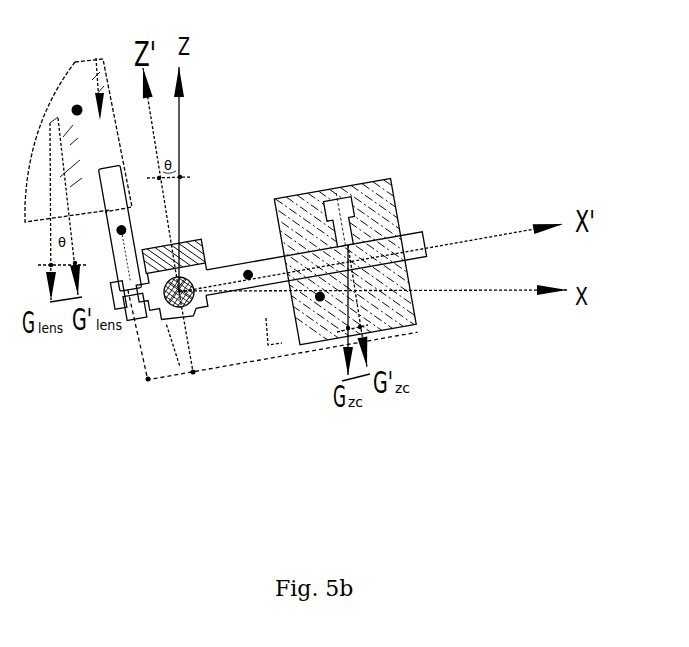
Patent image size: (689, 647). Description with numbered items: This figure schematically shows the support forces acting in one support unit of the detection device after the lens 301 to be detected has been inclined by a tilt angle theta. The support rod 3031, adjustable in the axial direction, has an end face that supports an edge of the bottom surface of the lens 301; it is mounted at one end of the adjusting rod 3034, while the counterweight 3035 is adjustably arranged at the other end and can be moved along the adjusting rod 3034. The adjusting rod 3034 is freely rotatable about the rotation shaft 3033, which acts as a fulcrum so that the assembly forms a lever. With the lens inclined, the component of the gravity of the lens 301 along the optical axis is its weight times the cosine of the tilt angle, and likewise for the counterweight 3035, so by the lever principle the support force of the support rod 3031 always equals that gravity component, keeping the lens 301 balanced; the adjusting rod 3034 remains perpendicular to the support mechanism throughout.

The lens to be detected 301 is at (75, 62).
The support rod 3031 is at (113, 318).
The rotation shaft 3033 is at (193, 372).
The adjusting rod 3034 is at (248, 275).
The counterweight 3035 is at (320, 297).